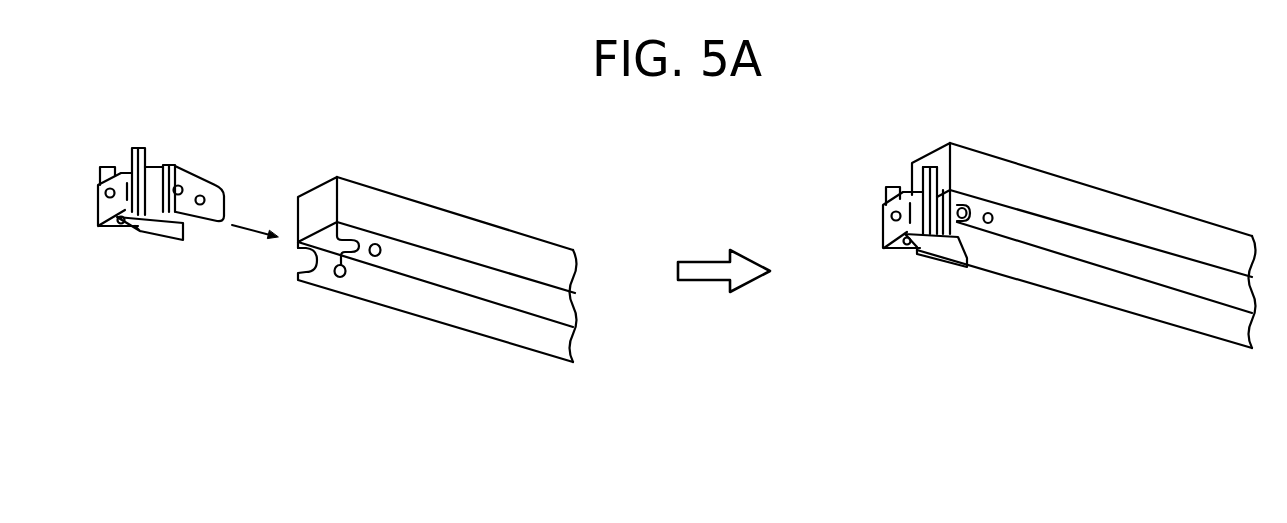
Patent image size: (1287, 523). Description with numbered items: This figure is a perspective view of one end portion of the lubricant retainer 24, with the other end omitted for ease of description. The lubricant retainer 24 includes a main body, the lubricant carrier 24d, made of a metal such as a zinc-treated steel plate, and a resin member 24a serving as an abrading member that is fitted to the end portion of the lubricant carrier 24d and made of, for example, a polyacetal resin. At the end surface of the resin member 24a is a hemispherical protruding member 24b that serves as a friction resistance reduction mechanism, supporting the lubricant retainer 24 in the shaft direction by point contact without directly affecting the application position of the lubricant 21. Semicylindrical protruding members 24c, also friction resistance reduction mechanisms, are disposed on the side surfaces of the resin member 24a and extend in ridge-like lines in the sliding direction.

The lubricant 21 is at (488, 230).
The lubricant retainer 24 is at (487, 366).
The resin member 24a is at (121, 226).
The protruding member 24b is at (883, 218).
The semicylindrical protruding member 24c is at (929, 167).
The lubricant carrier 24d is at (449, 283).